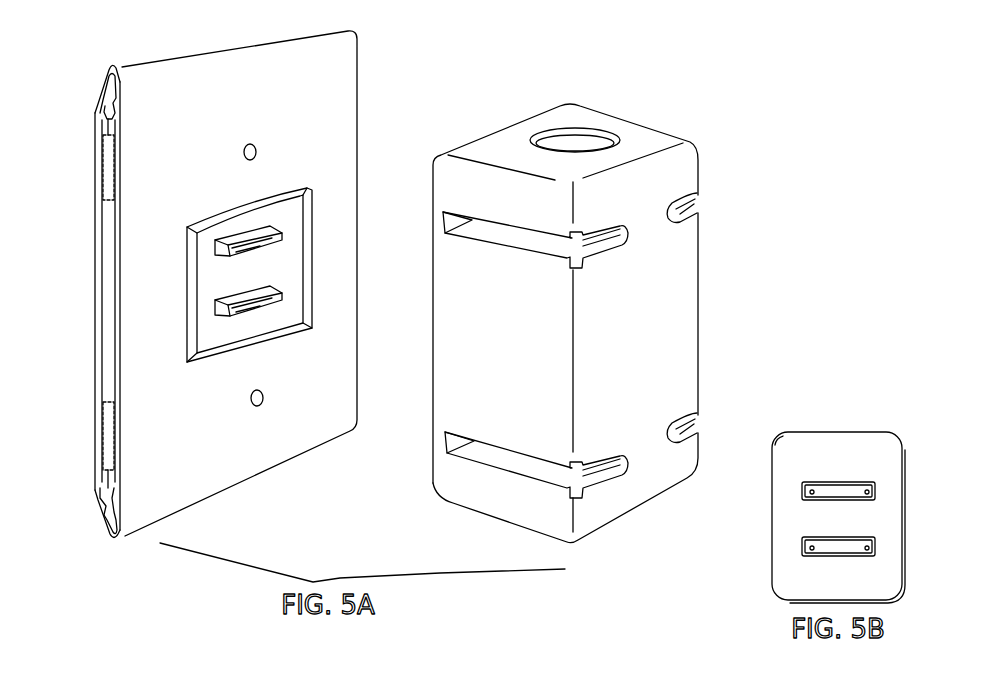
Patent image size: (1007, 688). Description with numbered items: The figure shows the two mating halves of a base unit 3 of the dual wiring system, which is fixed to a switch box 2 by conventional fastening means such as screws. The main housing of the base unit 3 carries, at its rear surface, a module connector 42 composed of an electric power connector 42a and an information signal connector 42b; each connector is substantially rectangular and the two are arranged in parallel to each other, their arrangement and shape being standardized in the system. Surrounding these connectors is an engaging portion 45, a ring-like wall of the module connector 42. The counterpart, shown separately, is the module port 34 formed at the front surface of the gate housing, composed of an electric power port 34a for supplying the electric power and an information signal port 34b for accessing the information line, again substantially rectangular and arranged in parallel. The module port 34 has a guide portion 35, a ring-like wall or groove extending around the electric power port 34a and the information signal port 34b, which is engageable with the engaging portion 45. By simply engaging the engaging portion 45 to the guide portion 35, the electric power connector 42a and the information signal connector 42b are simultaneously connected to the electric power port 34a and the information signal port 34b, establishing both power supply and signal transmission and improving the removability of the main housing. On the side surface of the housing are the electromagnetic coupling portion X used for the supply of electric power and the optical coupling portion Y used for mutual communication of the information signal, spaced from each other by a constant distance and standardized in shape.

In FIG. 5A, the switch box 2 is at (672, 310).
In FIG. 5A, the base unit 3 is at (325, 108).
In FIG. 5A, the electromagnetic coupling portion X is at (107, 173).
In FIG. 5A, the optical coupling portion Y is at (110, 433).
In FIG. 5A, the module connector 42 is at (315, 210).
In FIG. 5A, the electric power connector 42a is at (278, 245).
In FIG. 5A, the information signal connector 42b is at (275, 307).
In FIG. 5A, the engaging portion 45 is at (308, 268).
In FIG. 5B, the module port 34 is at (815, 455).
In FIG. 5B, the guide portion 35 is at (797, 432).
In FIG. 5B, the electric power port 34a is at (802, 492).
In FIG. 5B, the information signal port 34b is at (802, 552).